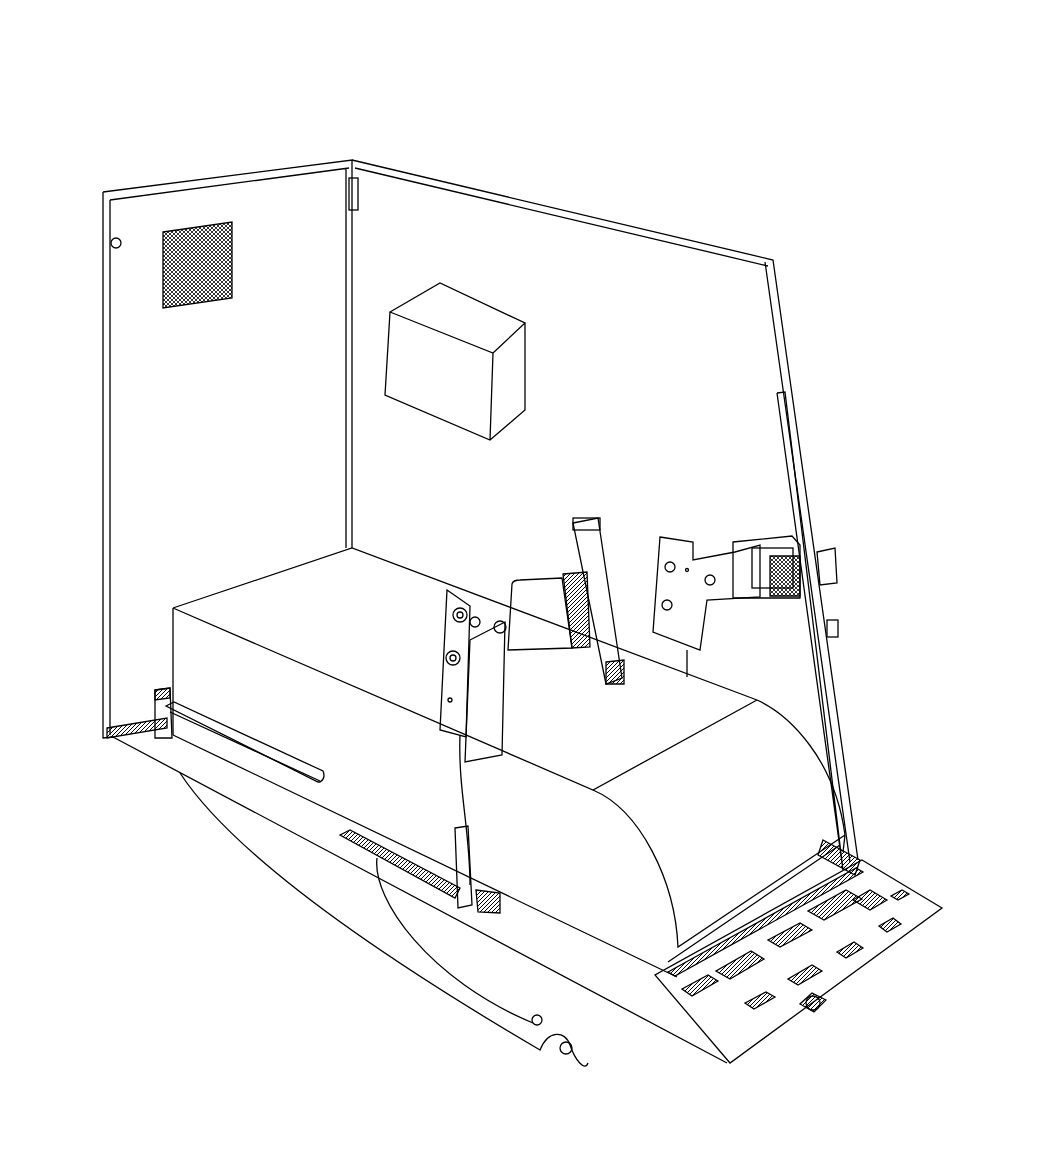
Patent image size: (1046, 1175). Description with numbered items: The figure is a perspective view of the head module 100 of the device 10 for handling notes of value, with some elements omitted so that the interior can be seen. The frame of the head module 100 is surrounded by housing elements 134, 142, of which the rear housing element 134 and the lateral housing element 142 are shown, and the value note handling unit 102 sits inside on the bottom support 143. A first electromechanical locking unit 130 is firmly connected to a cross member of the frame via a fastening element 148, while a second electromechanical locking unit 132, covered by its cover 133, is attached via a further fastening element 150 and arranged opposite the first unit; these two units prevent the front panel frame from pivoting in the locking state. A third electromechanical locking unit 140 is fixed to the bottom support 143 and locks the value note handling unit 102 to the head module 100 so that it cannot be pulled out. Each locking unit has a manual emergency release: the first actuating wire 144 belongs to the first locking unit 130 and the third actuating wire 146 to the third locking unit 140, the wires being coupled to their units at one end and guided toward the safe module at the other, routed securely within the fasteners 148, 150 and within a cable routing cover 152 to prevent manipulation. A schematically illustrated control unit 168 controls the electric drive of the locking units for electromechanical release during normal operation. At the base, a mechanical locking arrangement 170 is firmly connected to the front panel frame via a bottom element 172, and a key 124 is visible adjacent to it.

The device for handling notes of value 10 is at (200, 110).
The head module 100 is at (93, 272).
The value note handling unit 102 is at (395, 588).
The key 124 is at (818, 1012).
The first electromechanical locking unit 130 is at (765, 525).
The second electromechanical locking unit 132 is at (540, 572).
The cover 133 is at (543, 625).
The housing element 134 is at (500, 227).
The third electromechanical locking unit 140 is at (157, 742).
The housing element 142 is at (270, 200).
The bottom support 143 is at (645, 1025).
The first actuating wire 144 is at (380, 910).
The third actuating wire 146 is at (233, 848).
The fastening element 148 is at (697, 540).
The fastening element 150 is at (440, 627).
The cable routing cover 152 is at (472, 880).
The control unit 168 is at (440, 401).
The mechanical locking arrangement 170 is at (909, 850).
The bottom element 172 is at (860, 950).